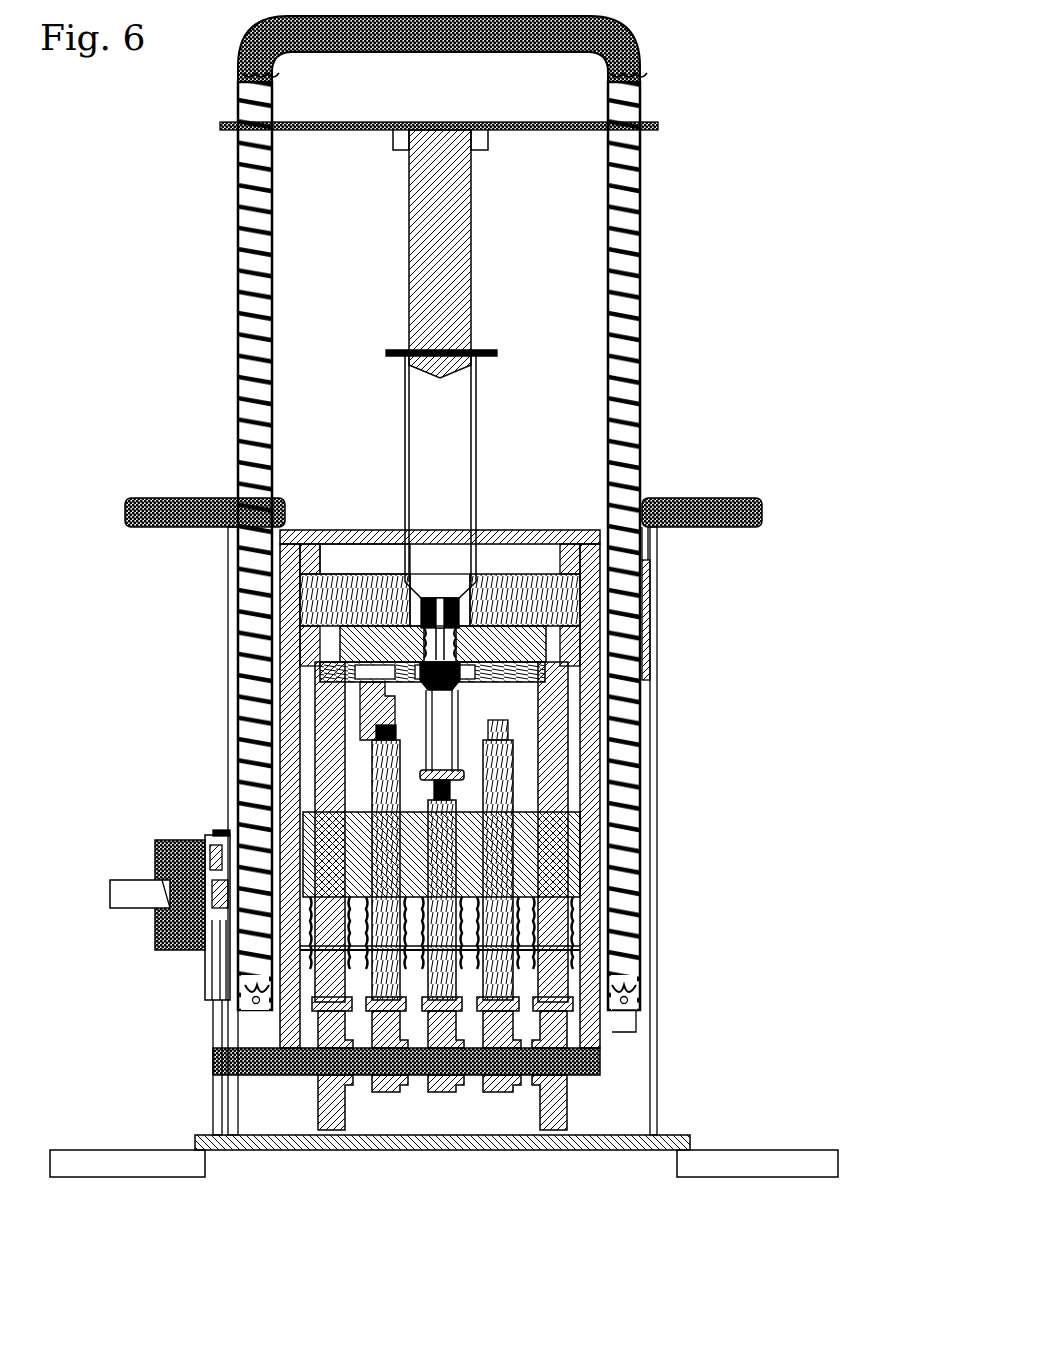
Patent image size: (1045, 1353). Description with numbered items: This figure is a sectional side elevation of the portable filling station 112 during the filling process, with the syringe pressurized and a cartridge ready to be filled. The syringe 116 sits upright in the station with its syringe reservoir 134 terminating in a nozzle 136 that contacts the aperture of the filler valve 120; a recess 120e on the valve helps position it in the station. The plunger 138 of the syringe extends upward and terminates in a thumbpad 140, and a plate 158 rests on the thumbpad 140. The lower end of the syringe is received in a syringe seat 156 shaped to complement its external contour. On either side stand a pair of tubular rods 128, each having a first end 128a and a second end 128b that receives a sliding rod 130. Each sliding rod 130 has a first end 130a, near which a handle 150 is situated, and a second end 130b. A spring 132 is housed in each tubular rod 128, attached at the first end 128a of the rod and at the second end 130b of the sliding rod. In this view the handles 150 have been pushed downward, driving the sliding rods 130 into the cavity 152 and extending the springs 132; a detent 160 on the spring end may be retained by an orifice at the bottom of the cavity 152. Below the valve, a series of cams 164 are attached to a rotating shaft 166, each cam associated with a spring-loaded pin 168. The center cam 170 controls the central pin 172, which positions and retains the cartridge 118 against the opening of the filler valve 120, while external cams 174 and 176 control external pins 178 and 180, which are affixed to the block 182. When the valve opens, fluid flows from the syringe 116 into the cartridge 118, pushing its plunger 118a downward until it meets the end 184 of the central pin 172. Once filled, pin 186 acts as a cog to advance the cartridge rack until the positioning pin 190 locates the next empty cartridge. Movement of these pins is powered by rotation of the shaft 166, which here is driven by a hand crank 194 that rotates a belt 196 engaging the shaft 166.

The portable filling station 112 is at (676, 151).
The syringe 116 is at (480, 271).
The cartridge 118 is at (422, 722).
The plunger 118a is at (537, 658).
The filler valve 120 is at (470, 640).
The recess 120e is at (428, 640).
The tubular rod 128 is at (641, 265).
The first end 128a is at (718, 55).
The second end 128b is at (718, 570).
The sliding rod 130 is at (657, 690).
The first end 130a is at (732, 475).
The second end 130b is at (657, 1019).
The spring 132 is at (641, 395).
The syringe reservoir 134 is at (460, 487).
The nozzle 136 is at (450, 585).
The plunger 138 is at (430, 232).
The thumbpad 140 is at (442, 122).
The handle 150 is at (722, 498).
The cavity 152 is at (600, 790).
The syringe seat 156 is at (405, 590).
The plate 158 is at (336, 122).
The detent 160 is at (628, 998).
The cams 164 is at (318, 1152).
The rotating shaft 166 is at (460, 1064).
The spring-loaded pin 168 is at (380, 800).
The center cam 170 is at (452, 1085).
The central pin 172 is at (460, 850).
The external cam 174 is at (338, 1095).
The external cam 176 is at (548, 1100).
The external pin 178 is at (335, 900).
The external pin 180 is at (535, 948).
The block 182 is at (310, 597).
The end 184 is at (440, 775).
The pin 186 is at (395, 940).
The positioning pin 190 is at (520, 905).
The hand crank 194 is at (155, 860).
The belt 196 is at (210, 952).